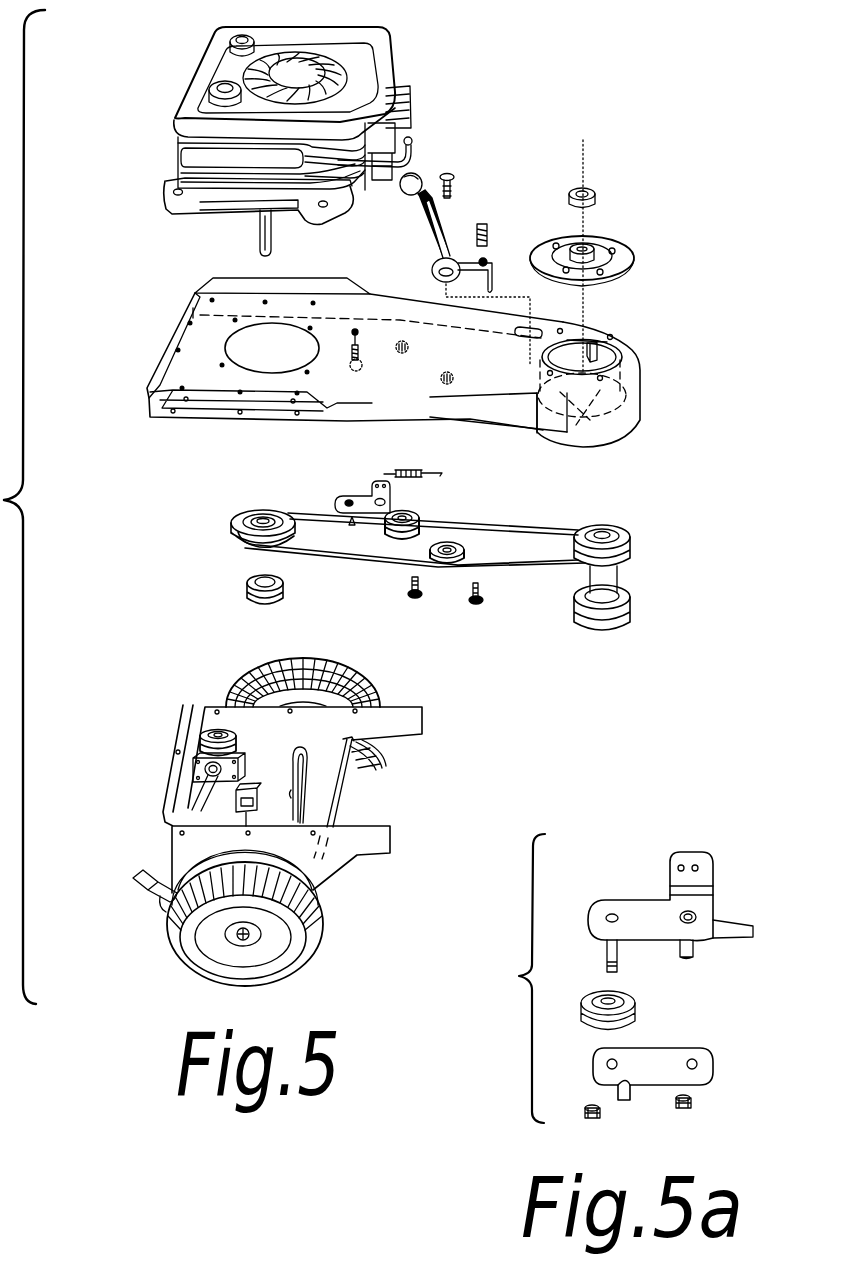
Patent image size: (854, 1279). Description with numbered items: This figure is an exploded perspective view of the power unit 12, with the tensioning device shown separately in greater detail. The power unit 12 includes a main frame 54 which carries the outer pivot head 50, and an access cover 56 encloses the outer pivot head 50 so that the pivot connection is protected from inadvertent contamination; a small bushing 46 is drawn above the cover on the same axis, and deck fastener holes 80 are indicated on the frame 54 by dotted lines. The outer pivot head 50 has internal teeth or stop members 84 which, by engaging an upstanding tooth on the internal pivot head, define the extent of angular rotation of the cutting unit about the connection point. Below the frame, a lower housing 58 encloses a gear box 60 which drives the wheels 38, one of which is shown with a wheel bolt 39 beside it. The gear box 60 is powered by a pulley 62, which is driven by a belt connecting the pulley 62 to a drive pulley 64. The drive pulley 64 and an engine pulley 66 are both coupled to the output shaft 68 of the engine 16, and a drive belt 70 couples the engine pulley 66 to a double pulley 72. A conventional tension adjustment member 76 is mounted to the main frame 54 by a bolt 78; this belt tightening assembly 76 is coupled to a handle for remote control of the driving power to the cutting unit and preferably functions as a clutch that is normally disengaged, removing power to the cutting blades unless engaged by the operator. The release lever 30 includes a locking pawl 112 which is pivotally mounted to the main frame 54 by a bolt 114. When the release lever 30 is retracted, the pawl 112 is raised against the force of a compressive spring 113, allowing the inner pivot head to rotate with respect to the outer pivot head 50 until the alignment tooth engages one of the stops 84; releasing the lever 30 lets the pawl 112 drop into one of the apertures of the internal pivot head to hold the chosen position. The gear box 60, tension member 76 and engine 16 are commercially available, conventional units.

In FIG. 5, the power unit 12 is at (596, 110).
In FIG. 5, the engine 16 is at (206, 48).
In FIG. 5, the release lever 30 is at (416, 177).
In FIG. 5, the wheels 38 is at (380, 699).
In FIG. 5, the wheel bolt 39 is at (135, 893).
In FIG. 5, the bushing 46 is at (597, 188).
In FIG. 5, the outer pivot head 50 is at (604, 401).
In FIG. 5, the main frame 54 is at (202, 398).
In FIG. 5, the access cover 56 is at (636, 250).
In FIG. 5, the lower housing 58 is at (318, 799).
In FIG. 5, the gear box 60 is at (246, 757).
In FIG. 5, the pulley 62 is at (200, 737).
In FIG. 5, the drive pulley 64 is at (246, 587).
In FIG. 5, the engine pulley 66 is at (232, 522).
In FIG. 5, the output shaft 68 is at (257, 234).
In FIG. 5, the drive belt 70 is at (514, 525).
In FIG. 5, the double pulley 72 is at (632, 538).
In FIG. 5, the tension adjustment member 76 is at (341, 487).
In FIG. 5A, the tension adjustment member 76 is at (717, 846).
In FIG. 5, the bolt 78 is at (352, 354).
In FIG. 5, the mounting holes 80 is at (402, 353).
In FIG. 5, the stop members 84 is at (616, 338).
In FIG. 5, the locking pawl 112 is at (489, 258).
In FIG. 5, the compressive spring 113 is at (483, 221).
In FIG. 5, the bolt 114 is at (452, 174).